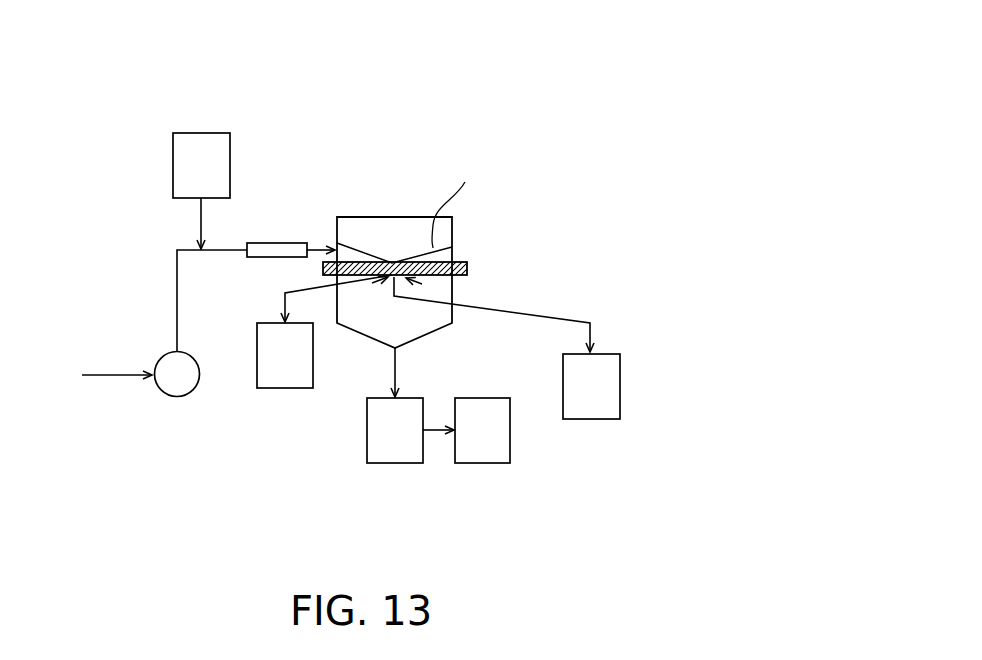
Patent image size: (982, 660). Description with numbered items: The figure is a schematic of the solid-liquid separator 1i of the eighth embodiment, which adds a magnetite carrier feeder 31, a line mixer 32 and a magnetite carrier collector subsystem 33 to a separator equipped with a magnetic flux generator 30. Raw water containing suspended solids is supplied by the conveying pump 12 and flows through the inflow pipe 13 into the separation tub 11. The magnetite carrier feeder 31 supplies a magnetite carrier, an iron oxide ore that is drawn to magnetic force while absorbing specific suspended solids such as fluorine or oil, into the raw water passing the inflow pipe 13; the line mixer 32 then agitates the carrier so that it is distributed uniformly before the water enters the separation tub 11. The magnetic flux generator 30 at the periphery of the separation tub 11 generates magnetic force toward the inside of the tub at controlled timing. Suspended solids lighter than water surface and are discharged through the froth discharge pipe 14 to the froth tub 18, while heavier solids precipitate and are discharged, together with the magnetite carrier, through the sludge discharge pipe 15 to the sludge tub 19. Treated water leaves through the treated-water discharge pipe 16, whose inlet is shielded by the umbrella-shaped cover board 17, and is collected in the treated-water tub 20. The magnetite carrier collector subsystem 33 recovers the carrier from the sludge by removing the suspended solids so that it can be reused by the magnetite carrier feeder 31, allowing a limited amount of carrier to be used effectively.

The solid-liquid separator 1i is at (557, 110).
The separation tub 11 is at (452, 225).
The conveying pump 12 is at (177, 397).
The inflow pipe 13 is at (218, 253).
The froth discharge pipe 14 is at (312, 287).
The sludge discharge pipe 15 is at (397, 368).
The treated-water discharge pipe 16 is at (588, 323).
The cover board 17 is at (410, 282).
The froth tub 18 is at (283, 388).
The sludge tub 19 is at (393, 463).
The treated-water tub 20 is at (590, 419).
The magnetic flux generator 30 is at (467, 270).
The magnetite carrier feeder 31 is at (203, 133).
The line mixer 32 is at (282, 243).
The magnetite carrier collector subsystem 33 is at (482, 463).